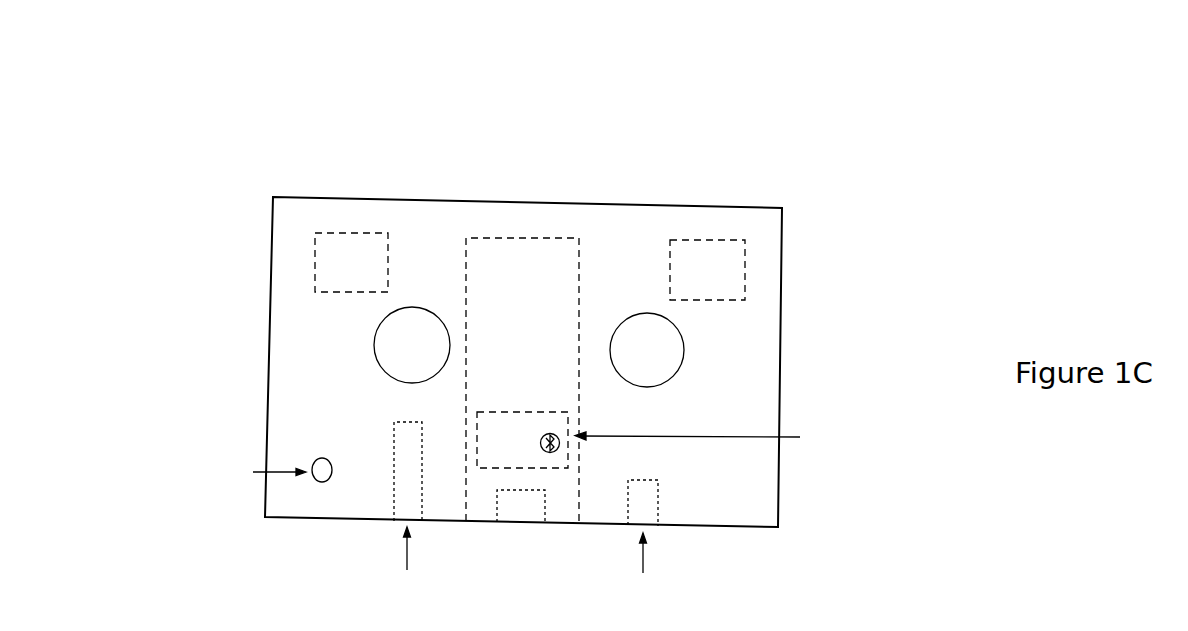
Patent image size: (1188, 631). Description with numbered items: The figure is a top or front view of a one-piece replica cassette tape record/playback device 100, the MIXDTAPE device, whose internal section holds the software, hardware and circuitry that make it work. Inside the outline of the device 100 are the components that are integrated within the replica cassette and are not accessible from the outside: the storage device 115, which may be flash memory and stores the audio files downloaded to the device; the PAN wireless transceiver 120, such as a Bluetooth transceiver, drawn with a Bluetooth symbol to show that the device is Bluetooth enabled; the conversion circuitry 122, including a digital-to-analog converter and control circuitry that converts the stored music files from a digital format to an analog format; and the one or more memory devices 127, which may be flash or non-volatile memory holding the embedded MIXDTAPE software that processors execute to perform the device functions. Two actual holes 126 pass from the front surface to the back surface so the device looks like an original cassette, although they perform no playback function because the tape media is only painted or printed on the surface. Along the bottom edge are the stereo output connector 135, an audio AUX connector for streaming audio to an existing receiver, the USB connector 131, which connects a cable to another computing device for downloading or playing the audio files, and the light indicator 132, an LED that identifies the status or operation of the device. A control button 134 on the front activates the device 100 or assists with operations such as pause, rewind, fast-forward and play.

The replica cassette tape record/playback device 100 is at (634, 94).
The storage device 115 is at (522, 380).
The PAN wireless transceiver 120 is at (701, 440).
The conversion circuitry 122 is at (351, 262).
The holes 126 is at (529, 347).
The memory devices 127 is at (707, 270).
The USB connector 131 is at (521, 506).
The light indicator 132 is at (698, 528).
The control button 134 is at (244, 459).
The stereo output connector 135 is at (365, 496).